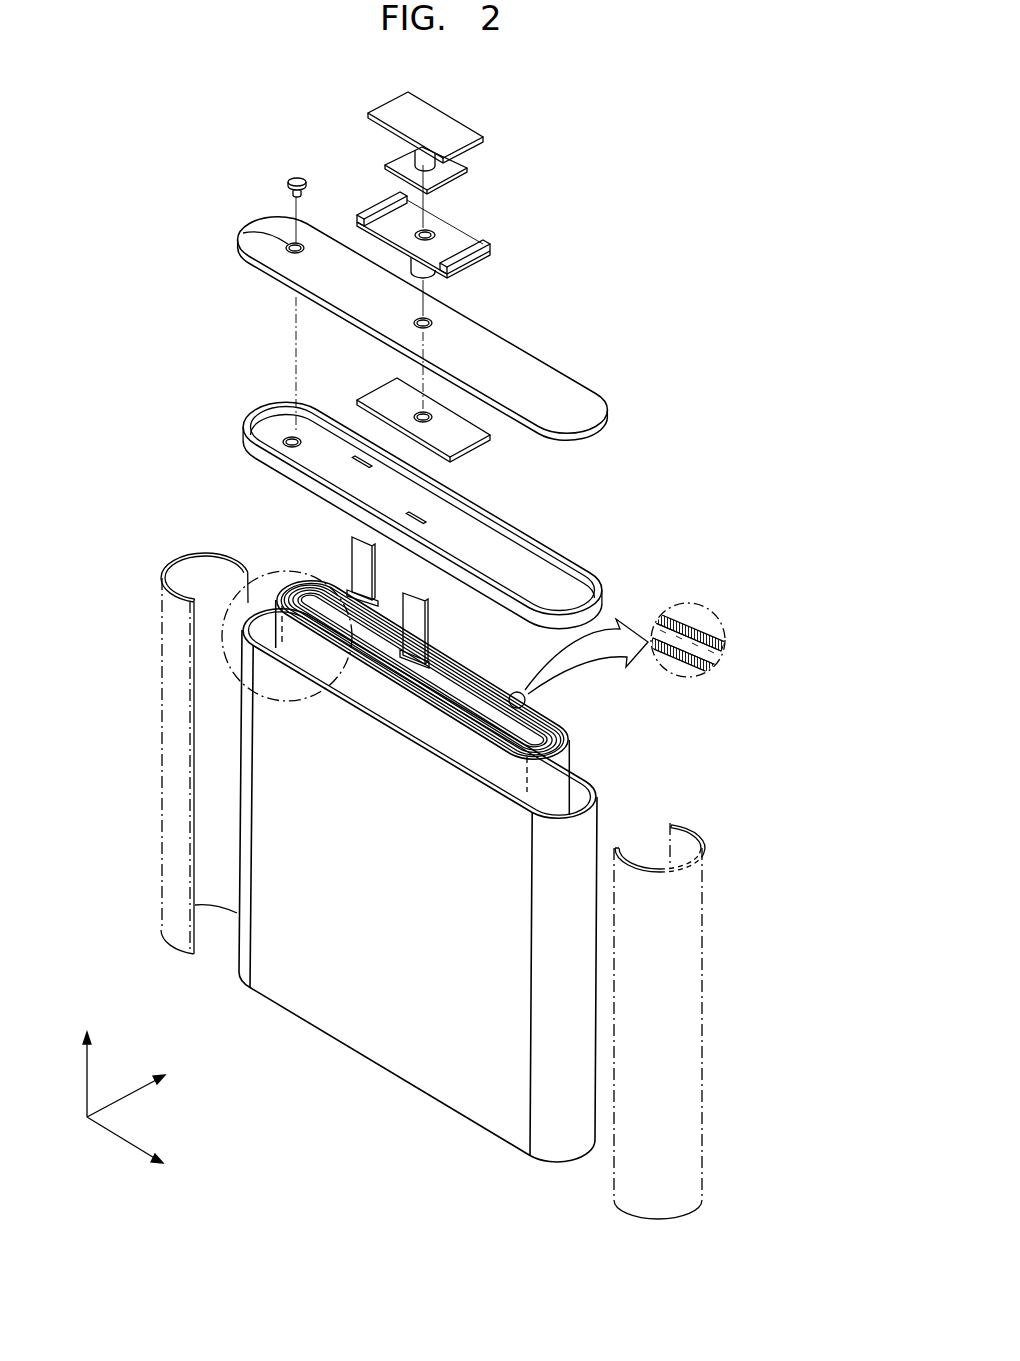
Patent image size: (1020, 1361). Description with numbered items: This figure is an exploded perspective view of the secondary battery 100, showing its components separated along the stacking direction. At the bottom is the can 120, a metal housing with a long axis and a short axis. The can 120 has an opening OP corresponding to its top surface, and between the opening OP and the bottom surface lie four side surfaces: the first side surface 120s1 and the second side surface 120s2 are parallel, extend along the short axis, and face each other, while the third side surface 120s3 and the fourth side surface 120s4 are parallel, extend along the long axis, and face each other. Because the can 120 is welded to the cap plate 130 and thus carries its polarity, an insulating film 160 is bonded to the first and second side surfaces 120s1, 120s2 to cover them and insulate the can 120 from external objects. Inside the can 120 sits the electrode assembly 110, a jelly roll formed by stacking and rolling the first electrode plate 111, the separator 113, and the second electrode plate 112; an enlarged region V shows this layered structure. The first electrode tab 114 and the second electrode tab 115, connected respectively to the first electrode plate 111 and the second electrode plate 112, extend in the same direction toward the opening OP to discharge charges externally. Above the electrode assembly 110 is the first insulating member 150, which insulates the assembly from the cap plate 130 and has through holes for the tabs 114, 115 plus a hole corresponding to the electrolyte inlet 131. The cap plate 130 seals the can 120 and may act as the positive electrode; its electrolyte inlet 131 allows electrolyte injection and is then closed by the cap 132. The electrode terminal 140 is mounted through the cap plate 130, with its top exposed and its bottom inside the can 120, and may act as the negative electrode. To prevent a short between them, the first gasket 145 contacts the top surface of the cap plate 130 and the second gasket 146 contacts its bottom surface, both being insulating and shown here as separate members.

The secondary battery 100 is at (647, 165).
The electrode assembly 110 is at (572, 728).
The first electrode plate 111 is at (705, 662).
The second electrode plate 112 is at (723, 648).
The separator 113 is at (720, 664).
The first electrode tab 114 is at (428, 632).
The second electrode tab 115 is at (357, 563).
The can 120 is at (450, 1107).
The first side surface 120s1 is at (238, 947).
The second side surface 120s2 is at (558, 1133).
The third side surface 120s3 is at (400, 1057).
The fourth side surface 120s4 is at (575, 773).
The opening OP is at (267, 620).
The cap plate 130 is at (560, 380).
The electrolyte inlet 131 is at (245, 233).
The cap 132 is at (293, 180).
The electrode terminal 140 is at (463, 133).
The first gasket 145 is at (482, 243).
The second gasket 146 is at (382, 398).
The first insulating member 150 is at (598, 588).
The insulating film 160 is at (165, 827).
The enlarged region V is at (222, 632).